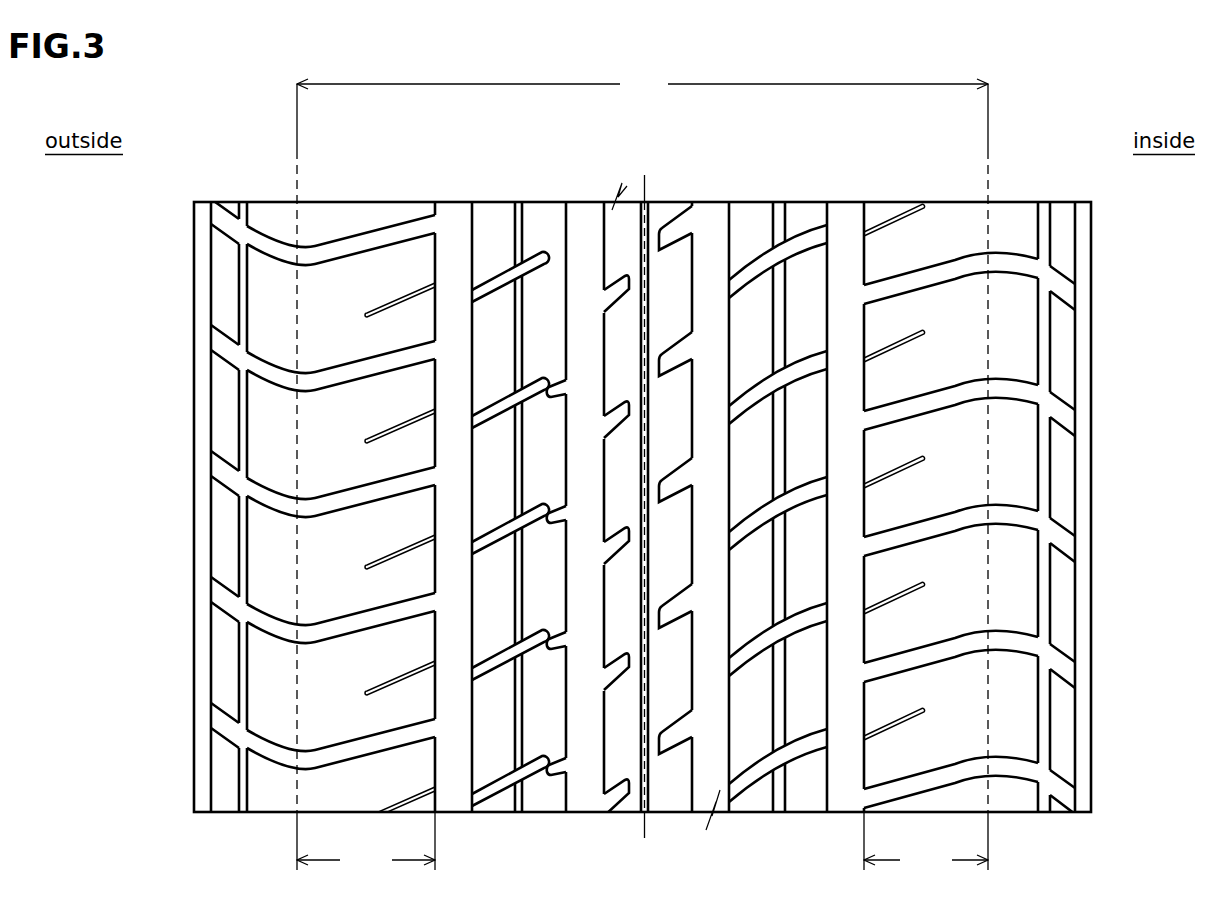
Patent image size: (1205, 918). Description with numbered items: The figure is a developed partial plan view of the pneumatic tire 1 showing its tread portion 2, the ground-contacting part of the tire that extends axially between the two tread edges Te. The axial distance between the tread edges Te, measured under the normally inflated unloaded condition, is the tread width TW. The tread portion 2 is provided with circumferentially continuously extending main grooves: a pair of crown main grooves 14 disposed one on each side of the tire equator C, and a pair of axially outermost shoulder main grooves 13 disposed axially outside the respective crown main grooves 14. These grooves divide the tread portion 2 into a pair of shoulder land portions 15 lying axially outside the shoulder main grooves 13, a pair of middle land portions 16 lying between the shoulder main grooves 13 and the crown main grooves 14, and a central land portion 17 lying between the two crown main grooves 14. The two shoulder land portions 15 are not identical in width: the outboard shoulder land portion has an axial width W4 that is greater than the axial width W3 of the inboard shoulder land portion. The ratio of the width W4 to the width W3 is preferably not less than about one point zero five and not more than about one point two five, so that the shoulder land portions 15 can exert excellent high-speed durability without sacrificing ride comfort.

The pneumatic tire 1 is at (1058, 190).
The tread portion 2 is at (859, 177).
The shoulder main groove 13 is at (453, 240).
The crown main groove 14 is at (583, 240).
The shoulder land portion 15 is at (352, 294).
The middle land portion 16 is at (493, 247).
The central land portion 17 is at (657, 273).
The tire equator C is at (643, 491).
The tread edge Te is at (297, 236).
The tread width TW is at (642, 85).
The axial width of the inboard shoulder land portion W3 is at (926, 843).
The axial width of the outboard shoulder land portion W4 is at (366, 843).